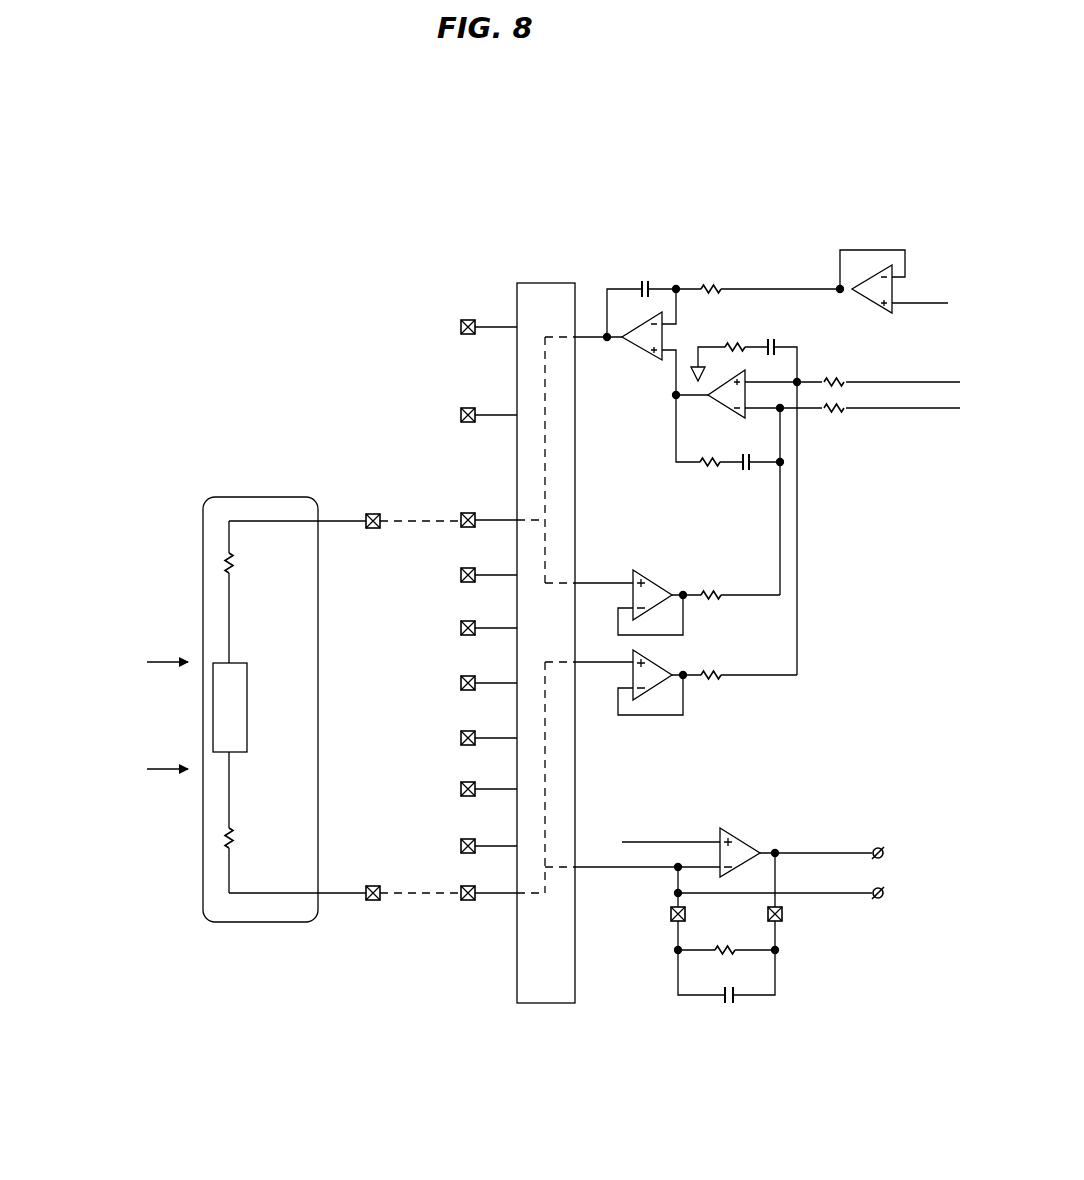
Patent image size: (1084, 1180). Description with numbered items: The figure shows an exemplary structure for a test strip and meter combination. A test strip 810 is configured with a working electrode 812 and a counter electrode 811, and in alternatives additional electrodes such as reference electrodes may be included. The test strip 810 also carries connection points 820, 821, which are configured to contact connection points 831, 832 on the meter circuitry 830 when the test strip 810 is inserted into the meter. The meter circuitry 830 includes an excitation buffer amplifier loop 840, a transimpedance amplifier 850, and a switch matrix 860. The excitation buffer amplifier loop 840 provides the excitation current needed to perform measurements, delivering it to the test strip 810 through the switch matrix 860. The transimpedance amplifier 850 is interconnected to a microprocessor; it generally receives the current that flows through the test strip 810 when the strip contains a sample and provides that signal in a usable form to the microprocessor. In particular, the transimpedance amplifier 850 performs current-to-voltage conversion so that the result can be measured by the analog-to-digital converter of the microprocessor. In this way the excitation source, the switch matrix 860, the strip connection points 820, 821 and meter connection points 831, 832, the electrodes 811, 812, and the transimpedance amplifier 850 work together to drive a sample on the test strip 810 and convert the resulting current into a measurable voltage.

The test strip 810 is at (236, 497).
The counter electrode 811 is at (168, 660).
The working electrode 812 is at (170, 771).
The connection point 820 is at (373, 514).
The connection point 821 is at (374, 900).
The meter circuitry 830 is at (615, 232).
The connection point 831 is at (468, 503).
The connection point 832 is at (455, 862).
The excitation buffer amplifier loop 840 is at (845, 226).
The transimpedance amplifier 850 is at (829, 769).
The switch matrix 860 is at (517, 288).